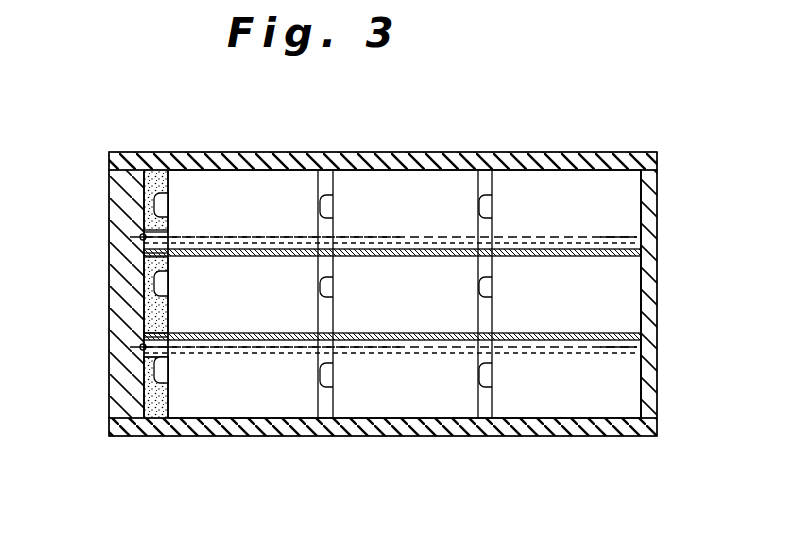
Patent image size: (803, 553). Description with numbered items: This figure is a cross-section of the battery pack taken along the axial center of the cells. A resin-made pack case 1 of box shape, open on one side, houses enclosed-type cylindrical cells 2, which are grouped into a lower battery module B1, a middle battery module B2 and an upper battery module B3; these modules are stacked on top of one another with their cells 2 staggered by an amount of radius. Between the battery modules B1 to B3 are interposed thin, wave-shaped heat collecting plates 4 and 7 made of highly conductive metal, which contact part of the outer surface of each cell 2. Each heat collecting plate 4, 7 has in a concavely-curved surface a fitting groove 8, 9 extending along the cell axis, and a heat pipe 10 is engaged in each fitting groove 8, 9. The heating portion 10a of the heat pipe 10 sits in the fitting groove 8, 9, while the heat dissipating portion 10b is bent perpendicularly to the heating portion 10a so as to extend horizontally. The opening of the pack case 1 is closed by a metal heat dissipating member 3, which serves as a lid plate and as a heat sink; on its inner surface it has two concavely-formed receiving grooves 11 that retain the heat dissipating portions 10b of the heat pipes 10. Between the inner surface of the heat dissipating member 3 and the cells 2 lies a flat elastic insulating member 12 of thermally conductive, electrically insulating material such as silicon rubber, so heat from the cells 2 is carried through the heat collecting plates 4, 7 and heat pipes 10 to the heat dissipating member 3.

The pack case 1 is at (420, 153).
The cell 2 is at (362, 195).
The heat dissipating member 3 is at (109, 193).
The heat collecting plate 4 is at (447, 340).
The heat collecting plate 7 is at (526, 245).
The fitting groove 8 is at (340, 350).
The fitting groove 9 is at (393, 228).
The heat pipe 10 is at (603, 231).
The heating portion 10a is at (588, 237).
The heat dissipating portion 10b is at (140, 237).
The receiving groove 11 is at (168, 252).
The elastic insulating member 12 is at (150, 265).
The lower battery module B1 is at (655, 375).
The middle battery module B2 is at (655, 290).
The upper battery module B3 is at (655, 208).